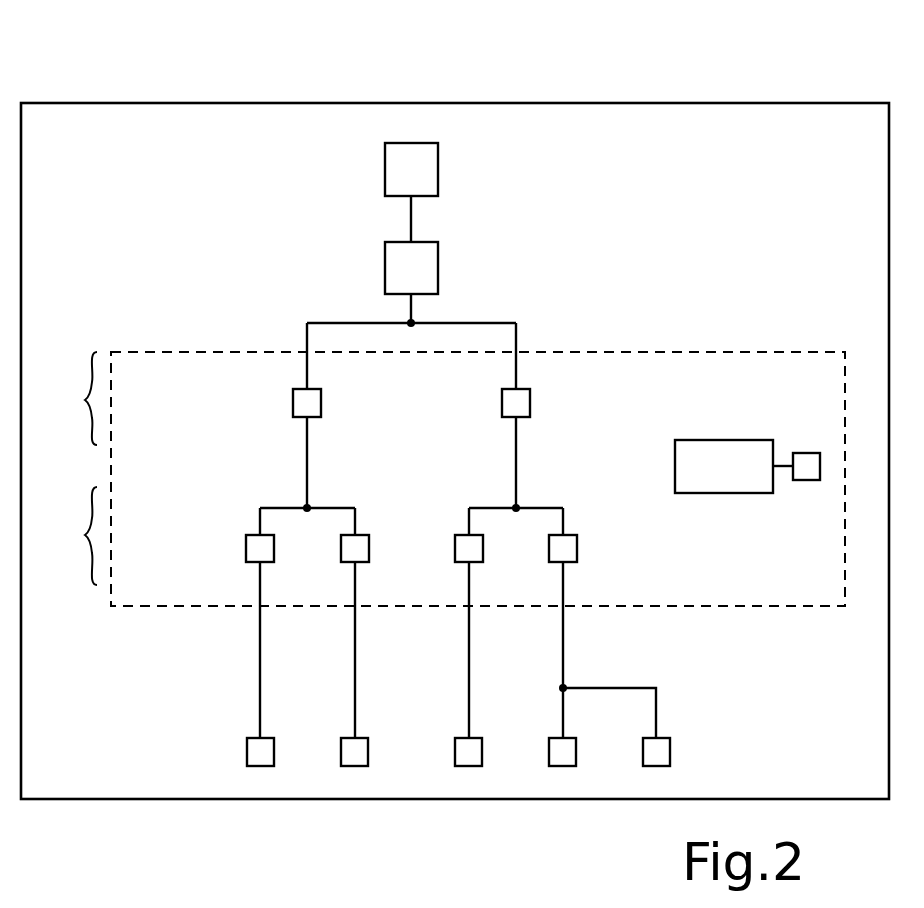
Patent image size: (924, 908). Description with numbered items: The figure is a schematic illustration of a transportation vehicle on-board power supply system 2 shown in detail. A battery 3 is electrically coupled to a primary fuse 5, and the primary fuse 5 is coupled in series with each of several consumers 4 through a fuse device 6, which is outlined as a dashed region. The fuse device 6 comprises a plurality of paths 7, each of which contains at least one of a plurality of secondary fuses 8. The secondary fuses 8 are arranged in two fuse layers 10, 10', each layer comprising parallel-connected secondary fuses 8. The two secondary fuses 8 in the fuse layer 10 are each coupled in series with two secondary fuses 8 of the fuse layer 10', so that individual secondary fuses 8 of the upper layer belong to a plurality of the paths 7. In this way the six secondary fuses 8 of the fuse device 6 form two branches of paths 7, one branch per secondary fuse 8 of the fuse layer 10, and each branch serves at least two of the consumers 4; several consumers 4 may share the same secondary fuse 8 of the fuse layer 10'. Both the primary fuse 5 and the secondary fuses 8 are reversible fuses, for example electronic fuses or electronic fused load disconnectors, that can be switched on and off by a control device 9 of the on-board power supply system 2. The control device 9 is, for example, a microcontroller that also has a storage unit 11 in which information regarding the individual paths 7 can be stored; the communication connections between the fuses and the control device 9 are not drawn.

The transportation vehicle on-board power supply system 2 is at (742, 84).
The battery 3 is at (438, 170).
The consumers 4 is at (274, 752).
The primary fuse 5 is at (438, 265).
The fuse device 6 is at (723, 349).
The paths 7 is at (290, 508).
The secondary fuses 8 is at (321, 403).
The control device 9 is at (720, 493).
The fuse layer 10 is at (72, 398).
The fuse layer 10' is at (72, 536).
The storage unit 11 is at (805, 453).